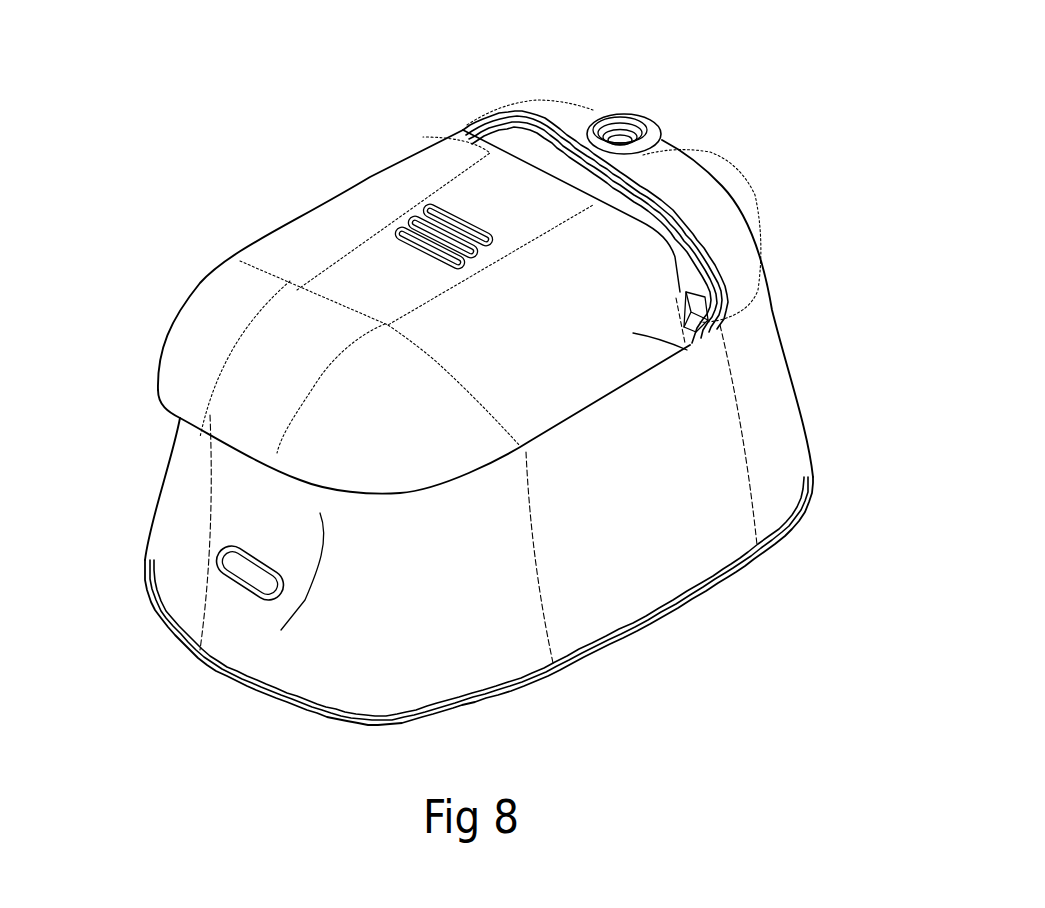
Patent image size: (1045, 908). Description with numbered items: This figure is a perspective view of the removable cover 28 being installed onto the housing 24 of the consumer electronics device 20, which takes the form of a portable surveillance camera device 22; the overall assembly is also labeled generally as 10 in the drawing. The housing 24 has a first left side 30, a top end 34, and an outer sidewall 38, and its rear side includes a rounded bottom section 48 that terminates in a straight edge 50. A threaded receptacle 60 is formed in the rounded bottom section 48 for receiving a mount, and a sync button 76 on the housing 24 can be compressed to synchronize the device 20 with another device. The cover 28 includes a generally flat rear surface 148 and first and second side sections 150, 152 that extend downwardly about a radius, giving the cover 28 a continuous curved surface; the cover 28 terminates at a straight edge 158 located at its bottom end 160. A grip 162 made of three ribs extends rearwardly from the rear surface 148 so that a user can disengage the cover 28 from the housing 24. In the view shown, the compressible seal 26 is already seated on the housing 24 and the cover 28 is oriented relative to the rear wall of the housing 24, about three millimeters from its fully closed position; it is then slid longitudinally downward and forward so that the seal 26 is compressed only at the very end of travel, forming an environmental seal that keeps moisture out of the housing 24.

The device 10 is at (486, 397).
The consumer electronics device 20 is at (473, 355).
The portable surveillance camera device 22 is at (445, 118).
The housing 24 is at (653, 633).
The compressible seal 26 is at (683, 252).
The removable cover 28 is at (228, 260).
The first left side 30 is at (560, 440).
The top end 34 is at (312, 497).
The outer sidewall 38 is at (664, 520).
The rounded bottom section 48 is at (737, 263).
The straight edge 50 is at (716, 228).
The threaded receptacle 60 is at (620, 115).
The sync button 76 is at (235, 594).
The rear surface 148 is at (347, 265).
The first side section 150 is at (687, 350).
The second side section 152 is at (395, 180).
The straight edge 158 is at (263, 367).
The bottom end 160 is at (497, 153).
The grip 162 is at (418, 252).